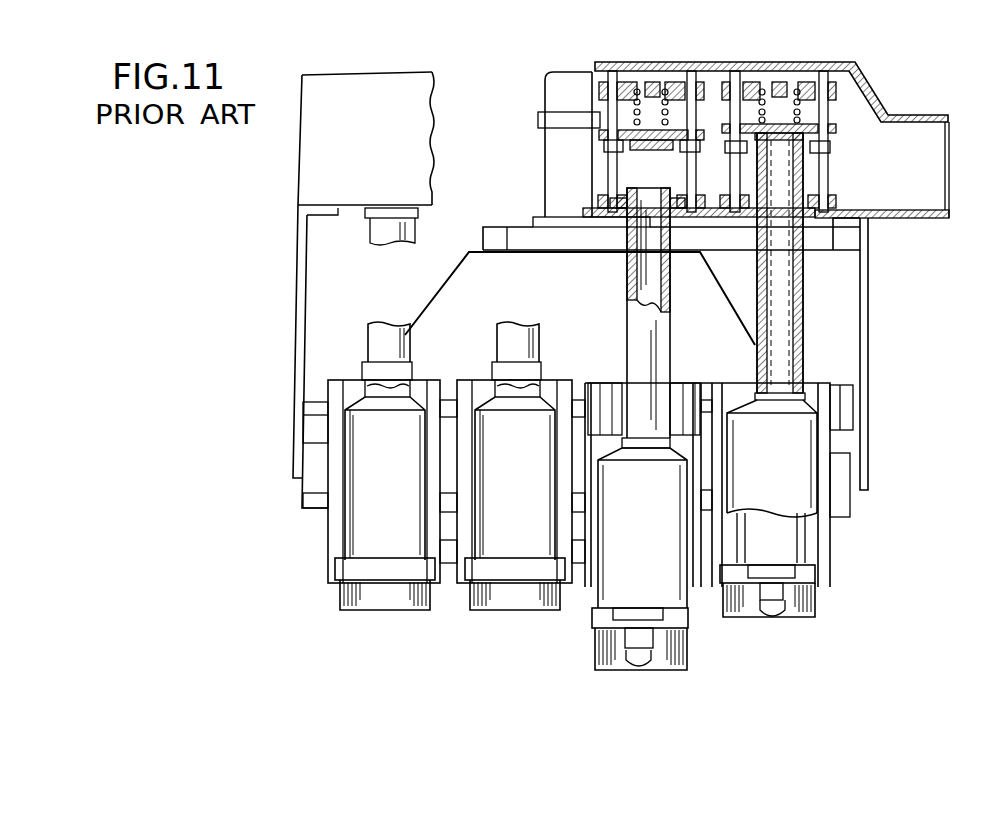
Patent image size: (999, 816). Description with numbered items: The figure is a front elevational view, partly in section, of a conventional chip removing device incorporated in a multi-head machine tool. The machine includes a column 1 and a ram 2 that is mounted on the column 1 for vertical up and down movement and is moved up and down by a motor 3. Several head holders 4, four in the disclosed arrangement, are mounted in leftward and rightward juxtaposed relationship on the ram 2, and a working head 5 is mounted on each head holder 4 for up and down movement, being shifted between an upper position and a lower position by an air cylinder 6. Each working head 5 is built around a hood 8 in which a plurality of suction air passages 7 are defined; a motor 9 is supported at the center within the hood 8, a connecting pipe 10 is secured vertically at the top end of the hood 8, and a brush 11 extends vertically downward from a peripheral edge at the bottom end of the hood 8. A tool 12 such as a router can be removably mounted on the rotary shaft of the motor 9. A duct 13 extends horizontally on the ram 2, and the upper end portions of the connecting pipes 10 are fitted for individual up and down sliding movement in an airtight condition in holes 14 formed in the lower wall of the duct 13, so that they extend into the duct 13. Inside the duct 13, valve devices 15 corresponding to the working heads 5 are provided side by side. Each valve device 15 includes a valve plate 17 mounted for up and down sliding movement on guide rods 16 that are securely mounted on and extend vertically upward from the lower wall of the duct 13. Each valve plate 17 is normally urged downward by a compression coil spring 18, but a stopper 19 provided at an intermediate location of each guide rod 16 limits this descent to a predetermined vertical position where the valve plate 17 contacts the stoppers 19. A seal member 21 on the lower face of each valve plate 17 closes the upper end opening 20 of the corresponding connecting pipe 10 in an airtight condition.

The column 1 is at (512, 237).
The ram 2 is at (708, 335).
The motor 3 is at (548, 92).
The head holder 4 is at (330, 525).
The working head 5 is at (335, 475).
The air cylinder 6 is at (505, 338).
The suction air passage 7 is at (765, 540).
The hood 8 is at (380, 447).
The motor 9 is at (648, 618).
The connecting pipe 10 is at (383, 232).
The brush 11 is at (340, 598).
The tool 12 is at (638, 660).
The duct 13 is at (920, 115).
The hole 14 is at (620, 208).
The valve device 15 is at (600, 110).
The guide rod 16 is at (610, 112).
The valve plate 17 is at (790, 100).
The compression coil spring 18 is at (660, 95).
The stopper 19 is at (605, 146).
The upper end opening 20 is at (608, 200).
The seal member 21 is at (640, 148).